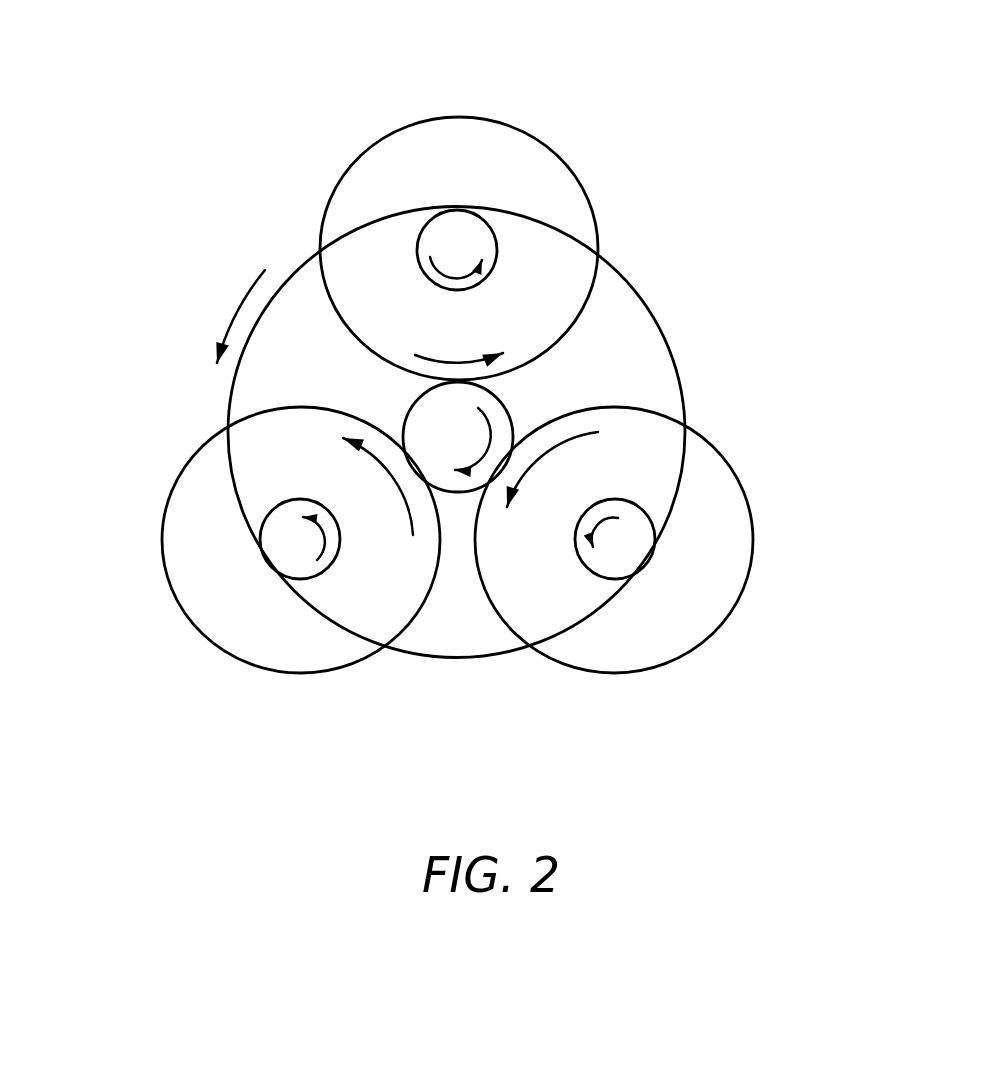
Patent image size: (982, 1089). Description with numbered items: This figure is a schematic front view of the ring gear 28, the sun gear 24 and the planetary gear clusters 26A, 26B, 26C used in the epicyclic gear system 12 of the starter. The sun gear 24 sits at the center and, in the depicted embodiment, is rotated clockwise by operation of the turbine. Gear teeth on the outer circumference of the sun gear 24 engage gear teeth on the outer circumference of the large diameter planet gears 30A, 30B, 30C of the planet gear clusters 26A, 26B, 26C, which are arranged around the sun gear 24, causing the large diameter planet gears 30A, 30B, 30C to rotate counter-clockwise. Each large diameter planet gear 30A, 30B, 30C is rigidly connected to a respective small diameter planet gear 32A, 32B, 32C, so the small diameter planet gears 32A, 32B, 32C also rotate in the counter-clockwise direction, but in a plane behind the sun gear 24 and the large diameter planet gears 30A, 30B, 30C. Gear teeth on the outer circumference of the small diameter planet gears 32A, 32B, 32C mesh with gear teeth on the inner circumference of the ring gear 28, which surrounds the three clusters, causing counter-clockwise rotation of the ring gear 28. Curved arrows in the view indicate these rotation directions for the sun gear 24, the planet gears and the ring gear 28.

The epicyclic gear system 12 is at (700, 108).
The sun gear 24 is at (508, 407).
The planetary gear cluster 26A is at (381, 135).
The planetary gear cluster 26B is at (697, 655).
The planetary gear cluster 26C is at (220, 655).
The ring gear 28 is at (680, 370).
The large diameter planet gear 30A is at (467, 113).
The large diameter planet gear 30B is at (752, 512).
The large diameter planet gear 30C is at (167, 575).
The small diameter planet gear 32A is at (497, 262).
The small diameter planet gear 32B is at (642, 508).
The small diameter planet gear 32C is at (273, 508).